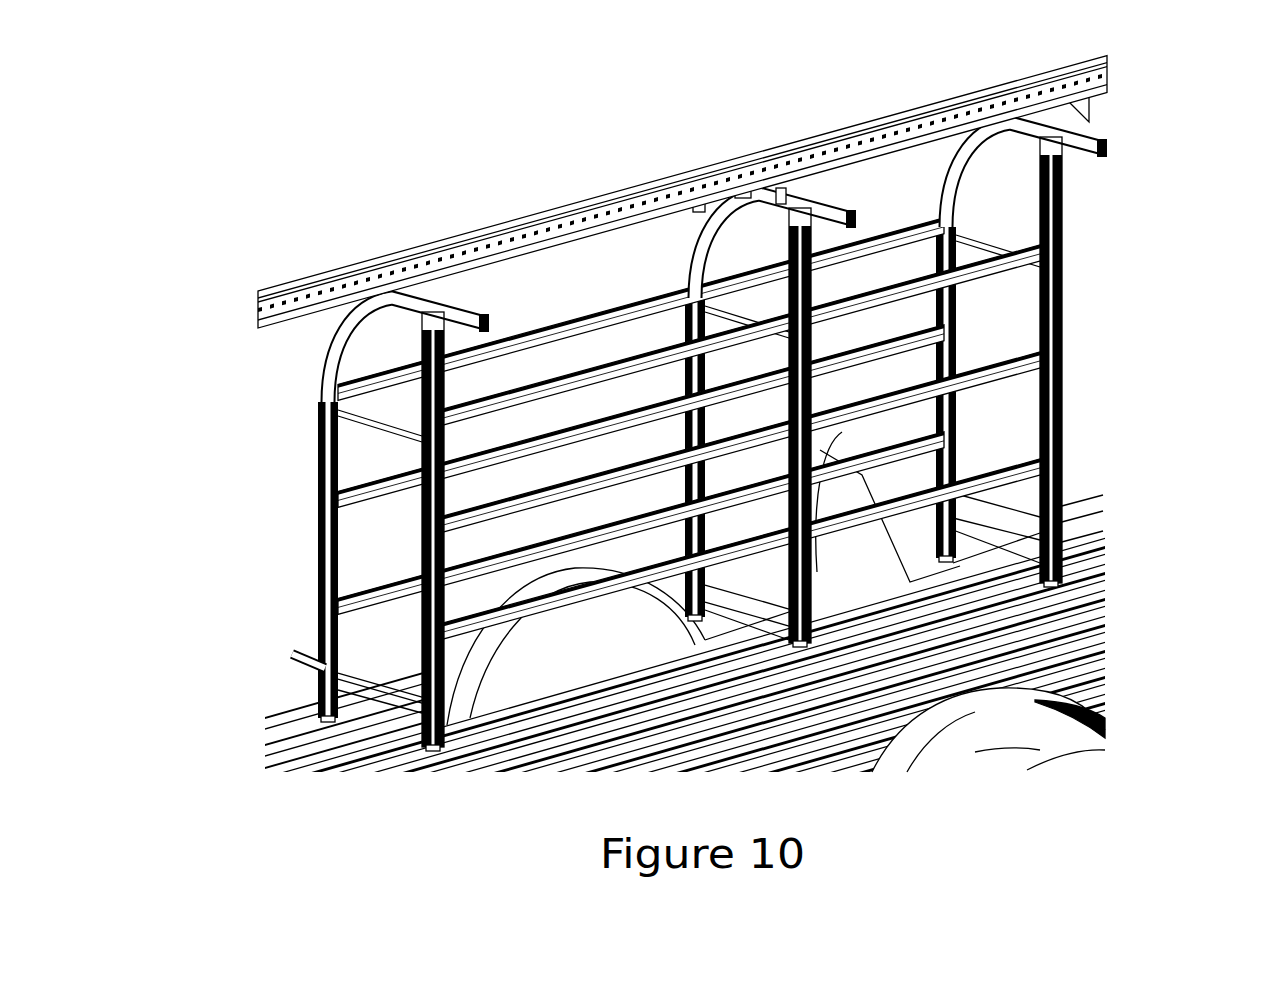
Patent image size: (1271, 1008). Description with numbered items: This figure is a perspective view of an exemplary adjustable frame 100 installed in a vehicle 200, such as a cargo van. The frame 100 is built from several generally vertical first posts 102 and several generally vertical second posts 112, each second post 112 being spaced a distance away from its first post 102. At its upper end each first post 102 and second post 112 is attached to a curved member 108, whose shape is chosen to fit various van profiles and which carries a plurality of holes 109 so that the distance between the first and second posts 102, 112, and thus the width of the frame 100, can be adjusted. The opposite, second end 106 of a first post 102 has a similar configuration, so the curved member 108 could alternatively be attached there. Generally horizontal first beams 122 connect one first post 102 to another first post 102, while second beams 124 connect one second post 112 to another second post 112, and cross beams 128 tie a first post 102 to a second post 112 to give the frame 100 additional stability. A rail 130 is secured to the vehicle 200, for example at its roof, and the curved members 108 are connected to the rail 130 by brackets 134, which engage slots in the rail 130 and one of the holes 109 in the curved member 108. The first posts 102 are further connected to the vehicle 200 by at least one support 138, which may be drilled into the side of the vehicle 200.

The adjustable frame 100 is at (1110, 240).
The vehicle 200 is at (642, 392).
The first post 102 is at (318, 505).
The second end 106 is at (286, 718).
The curved member 108 is at (700, 205).
The holes 109 is at (781, 192).
The second post 112 is at (492, 330).
The first beam 122 is at (645, 298).
The second beam 124 is at (1063, 270).
The cross beam 128 is at (318, 408).
The rail 130 is at (530, 222).
The bracket 134 is at (742, 185).
The support 138 is at (290, 657).